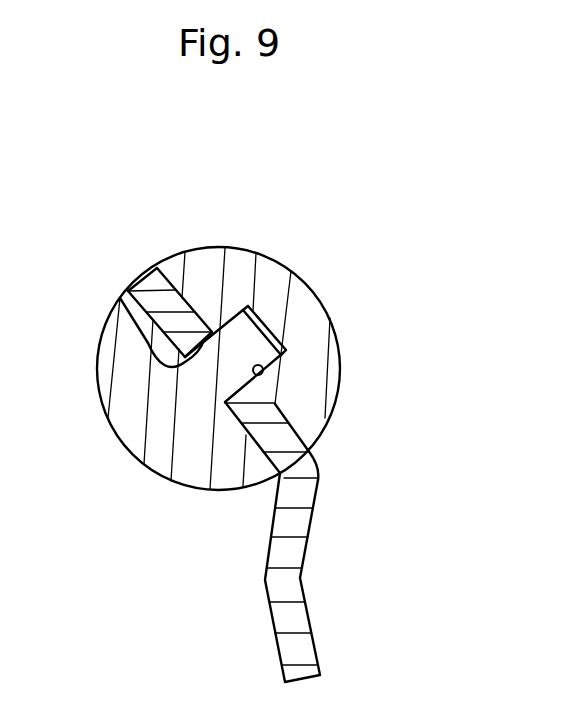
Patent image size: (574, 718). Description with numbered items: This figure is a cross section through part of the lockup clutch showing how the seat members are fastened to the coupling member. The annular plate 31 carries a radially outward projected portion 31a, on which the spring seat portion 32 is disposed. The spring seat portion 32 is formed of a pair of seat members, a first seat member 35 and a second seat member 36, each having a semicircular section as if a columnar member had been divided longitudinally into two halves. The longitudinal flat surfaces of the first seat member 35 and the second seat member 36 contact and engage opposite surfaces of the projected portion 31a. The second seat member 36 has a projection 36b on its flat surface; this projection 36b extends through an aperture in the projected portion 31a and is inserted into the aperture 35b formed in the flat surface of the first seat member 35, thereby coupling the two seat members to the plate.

The annular plate 31 is at (321, 606).
The projected portion 31a is at (184, 298).
The spring seat portion 32 is at (297, 233).
The first seat member 35 is at (265, 277).
The aperture 35b is at (122, 298).
The second seat member 36 is at (158, 413).
The projection 36b is at (247, 350).